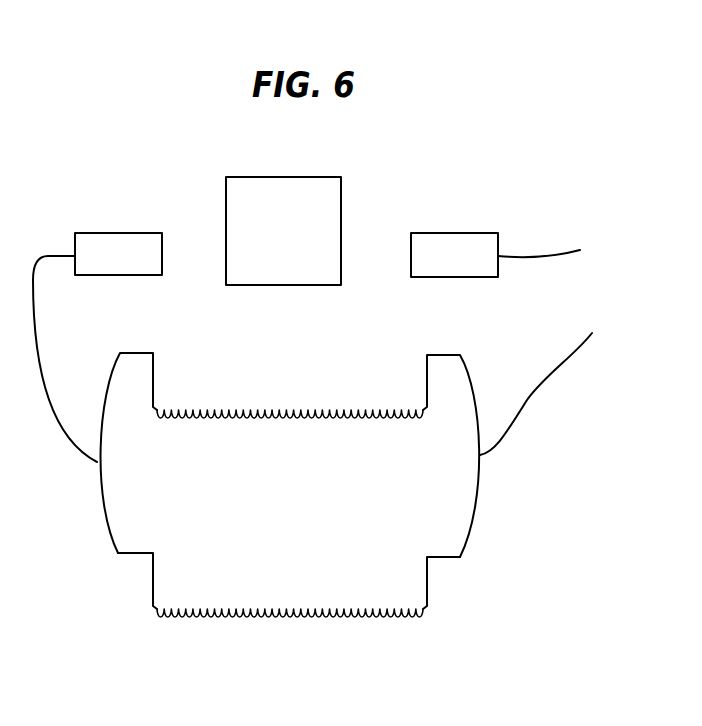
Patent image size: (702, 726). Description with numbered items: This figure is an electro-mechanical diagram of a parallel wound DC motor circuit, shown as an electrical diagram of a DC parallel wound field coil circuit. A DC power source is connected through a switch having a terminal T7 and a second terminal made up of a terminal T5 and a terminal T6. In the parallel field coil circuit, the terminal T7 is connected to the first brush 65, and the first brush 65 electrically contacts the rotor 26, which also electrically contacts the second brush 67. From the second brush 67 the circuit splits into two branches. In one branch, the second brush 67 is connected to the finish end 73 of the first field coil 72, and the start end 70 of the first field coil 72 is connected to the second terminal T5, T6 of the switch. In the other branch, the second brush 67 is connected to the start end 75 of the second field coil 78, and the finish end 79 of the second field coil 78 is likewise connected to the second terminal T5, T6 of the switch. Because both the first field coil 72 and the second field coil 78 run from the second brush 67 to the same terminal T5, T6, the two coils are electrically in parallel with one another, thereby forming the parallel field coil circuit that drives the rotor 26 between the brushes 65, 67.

The rotor 26 is at (320, 176).
The second brush 67 is at (145, 231).
The first brush 65 is at (480, 232).
The terminal T7 is at (567, 250).
The terminal T5 is at (543, 373).
The terminal T6 is at (580, 345).
The finish end 73 is at (135, 351).
The start end 70 is at (439, 355).
The start end 75 is at (152, 608).
The finish end 79 is at (430, 608).
The first field coil 72 is at (312, 420).
The second field coil 78 is at (302, 620).